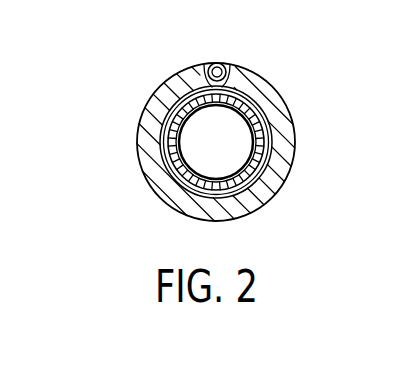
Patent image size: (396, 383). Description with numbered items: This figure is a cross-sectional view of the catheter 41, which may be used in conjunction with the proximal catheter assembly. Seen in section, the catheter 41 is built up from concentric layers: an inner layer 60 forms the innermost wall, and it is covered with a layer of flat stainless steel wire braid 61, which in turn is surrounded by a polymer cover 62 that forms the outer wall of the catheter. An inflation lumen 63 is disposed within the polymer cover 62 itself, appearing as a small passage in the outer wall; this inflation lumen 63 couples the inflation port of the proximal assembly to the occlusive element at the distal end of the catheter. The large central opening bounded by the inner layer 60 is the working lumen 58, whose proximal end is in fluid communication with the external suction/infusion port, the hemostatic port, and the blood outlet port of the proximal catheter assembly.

The catheter 41 is at (163, 62).
The working lumen 58 is at (215, 172).
The inner layer 60 is at (179, 151).
The flat stainless steel wire braid 61 is at (268, 133).
The polymer cover 62 is at (147, 125).
The inflation lumen 63 is at (217, 60).